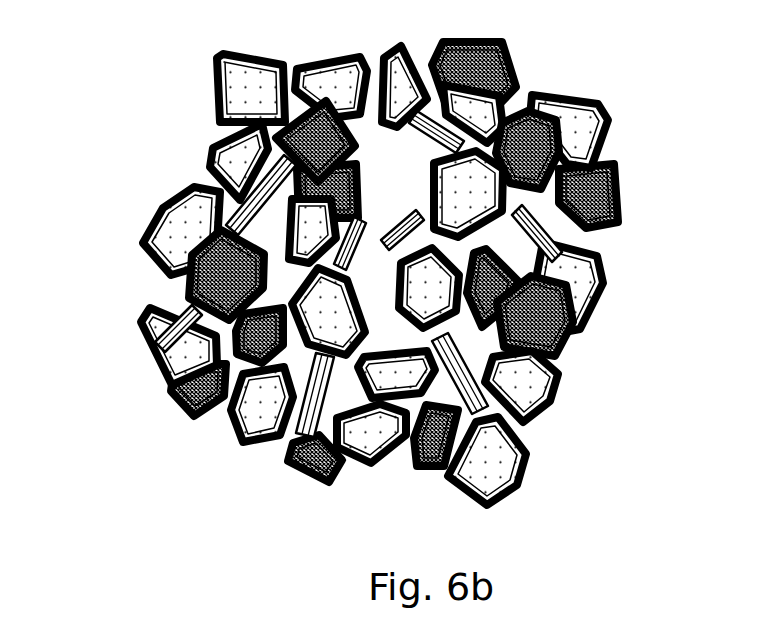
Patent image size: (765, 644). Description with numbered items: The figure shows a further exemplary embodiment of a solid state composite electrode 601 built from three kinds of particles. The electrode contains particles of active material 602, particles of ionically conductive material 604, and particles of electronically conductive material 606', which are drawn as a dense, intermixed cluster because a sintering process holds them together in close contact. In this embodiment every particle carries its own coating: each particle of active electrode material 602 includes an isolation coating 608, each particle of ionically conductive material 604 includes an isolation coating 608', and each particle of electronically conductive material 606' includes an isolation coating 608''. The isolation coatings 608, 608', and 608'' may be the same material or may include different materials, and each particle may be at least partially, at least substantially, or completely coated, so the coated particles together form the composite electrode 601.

The solid state composite electrode 601 is at (378, 273).
The particles of active material 602 is at (265, 100).
The particles of ionically conductive material 604 is at (578, 330).
The particles of electronically conductive material 606' is at (620, 236).
The isolation coating 608 is at (120, 219).
The isolation coating 608' is at (131, 390).
The isolation coating 608'' is at (122, 345).